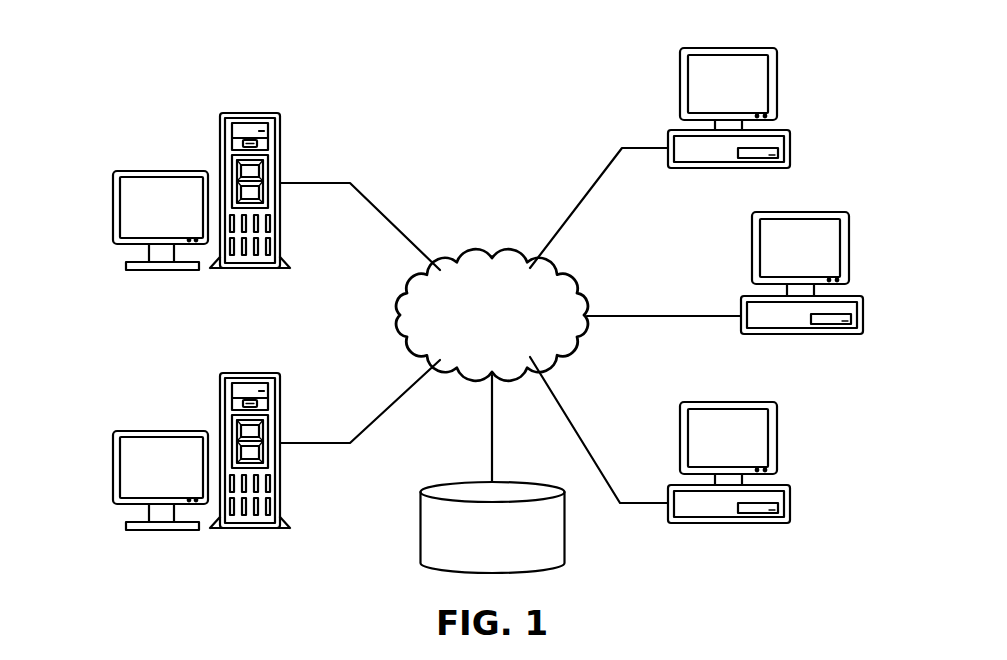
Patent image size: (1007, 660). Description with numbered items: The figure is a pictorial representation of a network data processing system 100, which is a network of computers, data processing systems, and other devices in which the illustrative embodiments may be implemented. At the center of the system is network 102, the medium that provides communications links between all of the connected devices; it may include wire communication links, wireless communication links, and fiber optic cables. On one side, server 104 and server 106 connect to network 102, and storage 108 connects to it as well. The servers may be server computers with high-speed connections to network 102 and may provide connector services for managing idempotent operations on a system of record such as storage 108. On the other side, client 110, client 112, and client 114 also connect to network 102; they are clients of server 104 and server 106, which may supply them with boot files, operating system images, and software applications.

The network data processing system 100 is at (378, 64).
The network 102 is at (462, 262).
The server 104 is at (113, 215).
The server 106 is at (113, 467).
The storage 108 is at (420, 525).
The client 110 is at (792, 140).
The client 112 is at (862, 325).
The client 114 is at (791, 511).